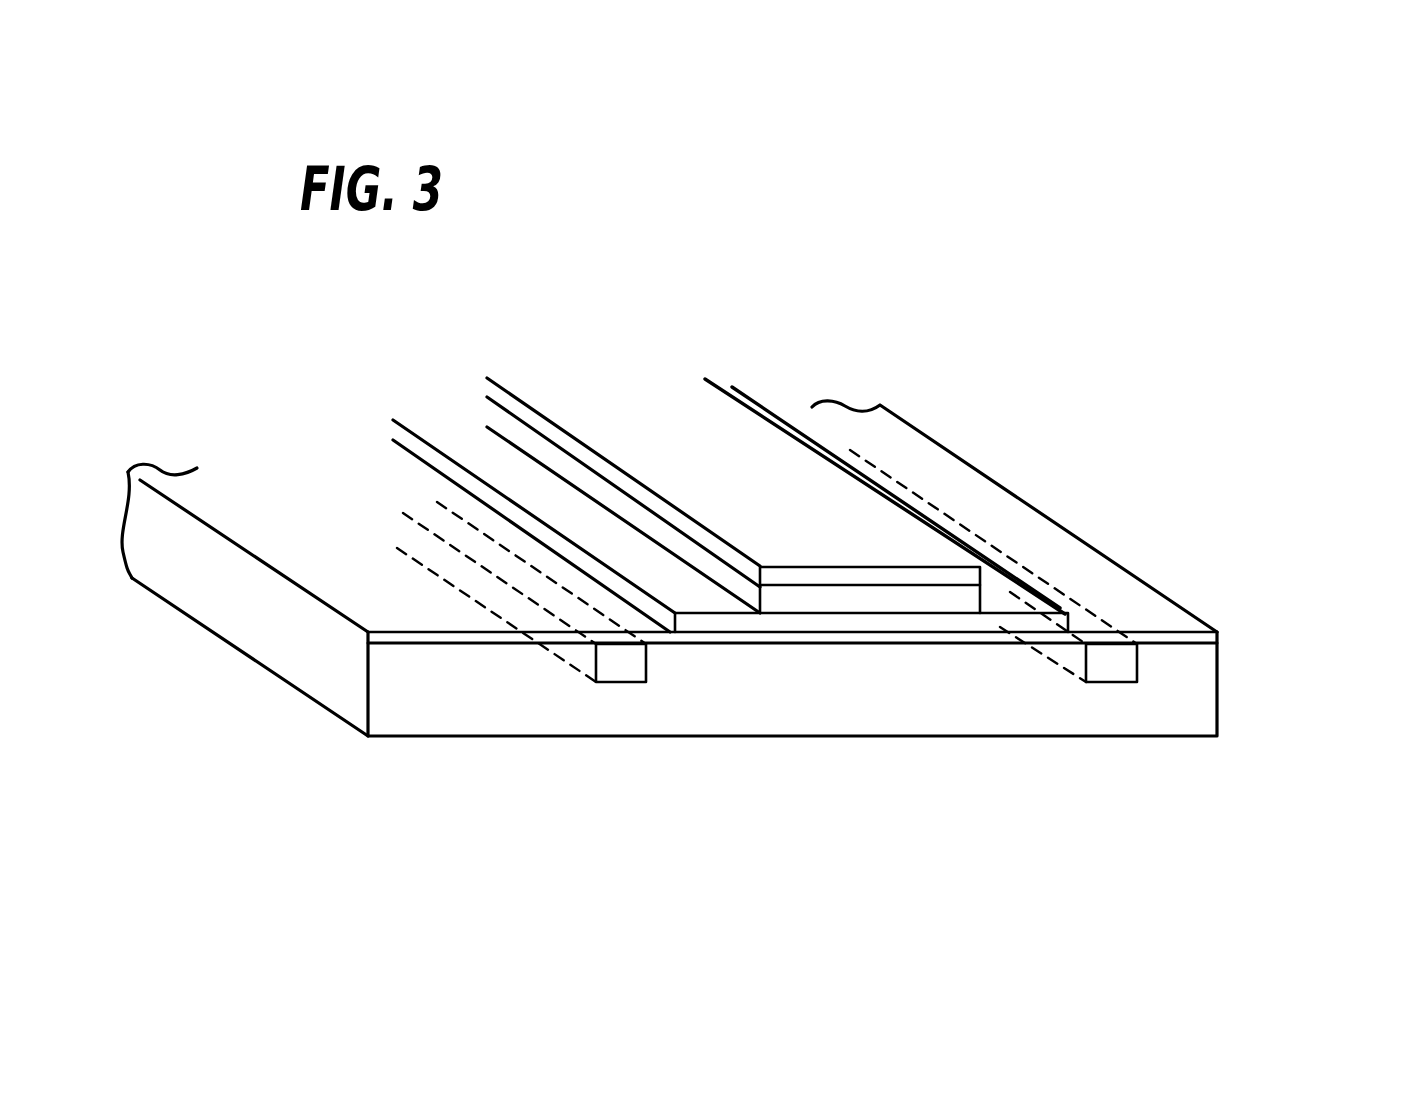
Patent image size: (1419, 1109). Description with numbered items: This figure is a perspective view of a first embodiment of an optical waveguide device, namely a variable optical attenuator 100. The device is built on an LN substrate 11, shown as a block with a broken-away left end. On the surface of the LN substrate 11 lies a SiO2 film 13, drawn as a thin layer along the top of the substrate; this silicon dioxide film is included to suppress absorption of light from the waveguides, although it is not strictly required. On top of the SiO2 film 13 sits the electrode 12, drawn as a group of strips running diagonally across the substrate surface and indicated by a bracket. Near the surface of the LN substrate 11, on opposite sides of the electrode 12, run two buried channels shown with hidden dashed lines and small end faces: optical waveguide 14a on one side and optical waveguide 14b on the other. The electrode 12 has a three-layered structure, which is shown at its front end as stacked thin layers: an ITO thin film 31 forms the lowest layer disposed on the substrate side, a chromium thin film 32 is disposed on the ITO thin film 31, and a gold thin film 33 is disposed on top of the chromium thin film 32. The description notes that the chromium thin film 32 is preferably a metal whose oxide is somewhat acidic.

The variable optical attenuator 100 is at (816, 383).
The LN substrate 11 is at (282, 677).
The electrode 12 is at (735, 370).
The SiO2 film 13 is at (1187, 637).
The optical waveguide 14a is at (620, 667).
The optical waveguide 14b is at (1108, 670).
The ITO thin film 31 is at (1030, 625).
The chromium thin film 32 is at (914, 598).
The gold thin film 33 is at (852, 577).